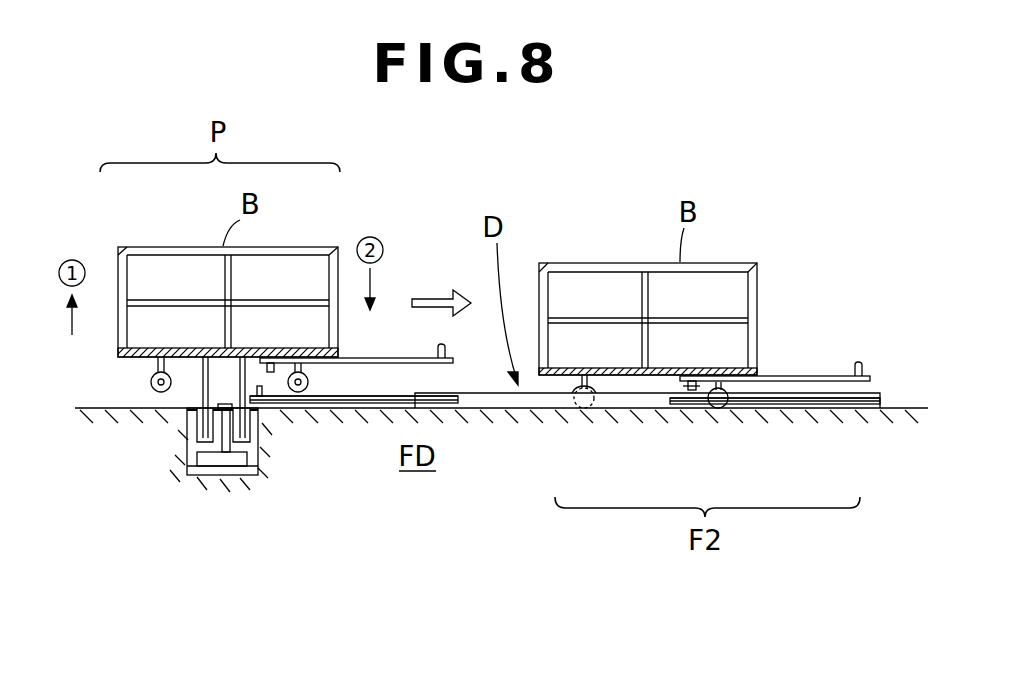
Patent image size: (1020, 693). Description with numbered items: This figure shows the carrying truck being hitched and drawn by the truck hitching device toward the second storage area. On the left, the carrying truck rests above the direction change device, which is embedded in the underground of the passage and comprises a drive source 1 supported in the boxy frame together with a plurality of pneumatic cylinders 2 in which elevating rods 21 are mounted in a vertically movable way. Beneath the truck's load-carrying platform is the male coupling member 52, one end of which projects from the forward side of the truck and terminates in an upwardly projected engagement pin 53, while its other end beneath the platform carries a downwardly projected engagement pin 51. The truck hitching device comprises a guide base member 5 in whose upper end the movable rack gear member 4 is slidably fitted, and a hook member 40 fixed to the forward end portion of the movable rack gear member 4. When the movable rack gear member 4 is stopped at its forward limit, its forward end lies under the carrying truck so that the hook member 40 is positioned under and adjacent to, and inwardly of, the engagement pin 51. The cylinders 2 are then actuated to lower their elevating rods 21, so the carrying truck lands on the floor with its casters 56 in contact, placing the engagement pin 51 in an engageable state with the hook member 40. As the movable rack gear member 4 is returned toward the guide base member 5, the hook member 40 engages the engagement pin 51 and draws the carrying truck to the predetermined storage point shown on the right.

The drive source 1 is at (222, 460).
The pneumatic cylinders 2 is at (203, 430).
The movable rack gear member 4 is at (375, 390).
The guide base member 5 is at (497, 400).
The elevating rods 21 is at (237, 377).
The hook member 40 is at (273, 390).
The downwardly projected engagement pin 51 is at (277, 367).
The male coupling member 52 is at (373, 358).
The upwardly projected engagement pin 53 is at (445, 345).
The casters 56 is at (150, 382).